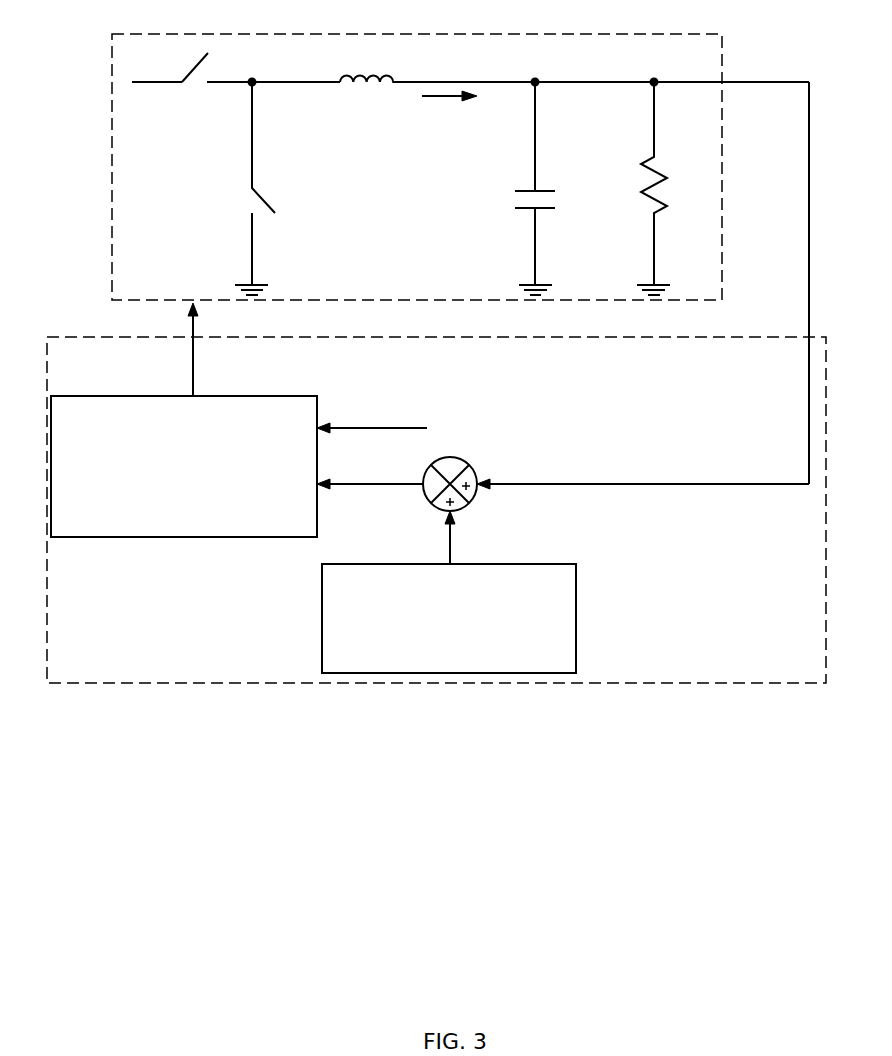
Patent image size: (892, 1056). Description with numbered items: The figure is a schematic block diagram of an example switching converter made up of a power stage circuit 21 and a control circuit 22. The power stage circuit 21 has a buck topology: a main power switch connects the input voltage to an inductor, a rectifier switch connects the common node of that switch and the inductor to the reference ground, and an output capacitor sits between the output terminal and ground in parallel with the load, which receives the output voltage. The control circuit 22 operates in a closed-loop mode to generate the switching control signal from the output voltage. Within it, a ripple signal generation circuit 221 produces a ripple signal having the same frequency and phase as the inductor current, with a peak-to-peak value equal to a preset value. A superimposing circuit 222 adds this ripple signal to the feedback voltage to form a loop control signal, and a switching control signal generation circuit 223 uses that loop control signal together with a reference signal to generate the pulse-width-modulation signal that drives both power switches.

The power stage circuit 21 is at (722, 44).
The control circuit 22 is at (746, 338).
The ripple signal generation circuit 221 is at (465, 652).
The superimposing circuit 222 is at (450, 456).
The switching control signal generation circuit 223 is at (200, 502).